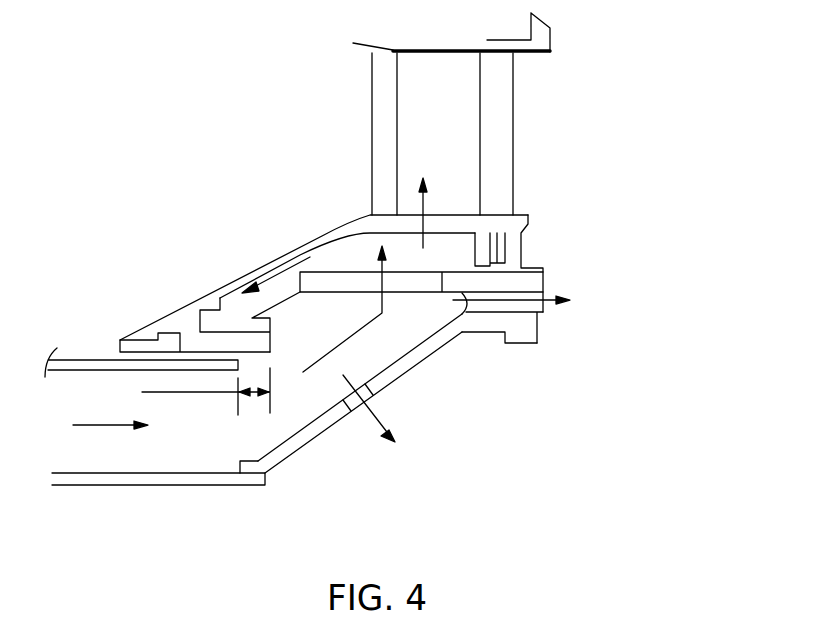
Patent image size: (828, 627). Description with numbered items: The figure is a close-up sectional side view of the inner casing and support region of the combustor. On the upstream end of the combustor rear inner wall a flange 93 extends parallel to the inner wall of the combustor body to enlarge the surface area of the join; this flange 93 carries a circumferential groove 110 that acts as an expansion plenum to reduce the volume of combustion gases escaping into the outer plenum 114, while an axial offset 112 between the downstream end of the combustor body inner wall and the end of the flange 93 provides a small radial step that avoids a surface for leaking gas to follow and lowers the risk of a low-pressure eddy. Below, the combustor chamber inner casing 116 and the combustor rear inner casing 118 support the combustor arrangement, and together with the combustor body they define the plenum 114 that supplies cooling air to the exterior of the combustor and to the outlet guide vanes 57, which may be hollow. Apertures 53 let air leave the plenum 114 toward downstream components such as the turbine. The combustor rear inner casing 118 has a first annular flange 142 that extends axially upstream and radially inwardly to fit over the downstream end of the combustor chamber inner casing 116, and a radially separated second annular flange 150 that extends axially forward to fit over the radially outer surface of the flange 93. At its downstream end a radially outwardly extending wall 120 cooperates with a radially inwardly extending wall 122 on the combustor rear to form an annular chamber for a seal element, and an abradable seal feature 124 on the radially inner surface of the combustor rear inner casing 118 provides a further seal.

The apertures 53 is at (478, 302).
The outlet guide vanes 57 is at (410, 132).
The flange 93 is at (193, 328).
The circumferential groove 110 is at (168, 345).
The axial offset 112 is at (253, 360).
The plenum 114 is at (272, 429).
The combustor chamber inner casing 116 is at (123, 486).
The combustor rear inner casing 118 is at (588, 260).
The radially outwardly extending wall 120 is at (523, 243).
The radially inwardly extending wall 122 is at (483, 242).
The abradable seal feature 124 is at (533, 340).
The first annular flange 142 is at (270, 460).
The second annular flange 150 is at (313, 280).